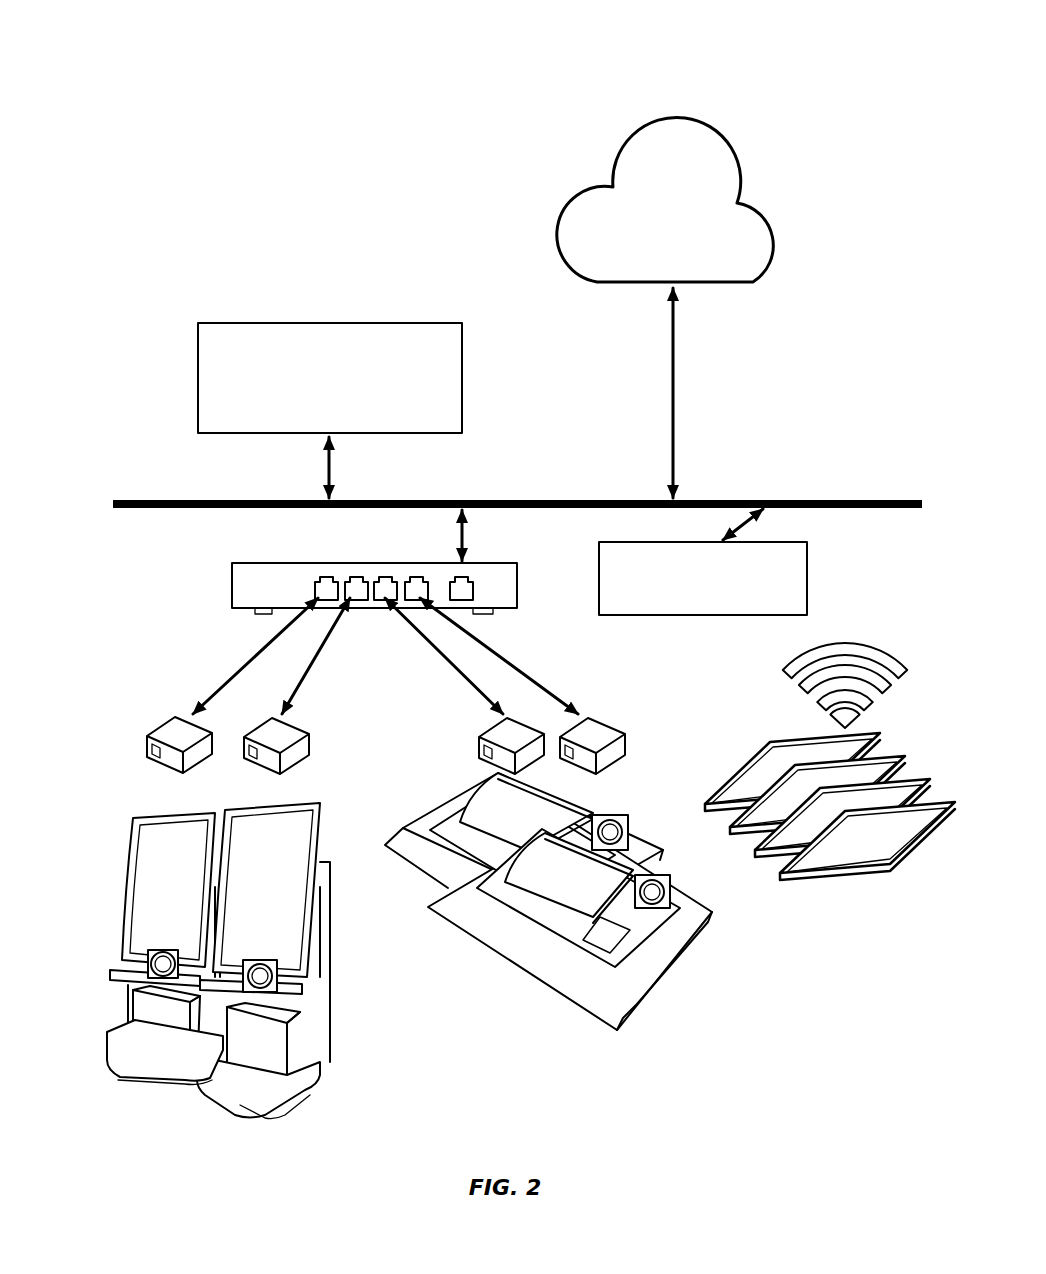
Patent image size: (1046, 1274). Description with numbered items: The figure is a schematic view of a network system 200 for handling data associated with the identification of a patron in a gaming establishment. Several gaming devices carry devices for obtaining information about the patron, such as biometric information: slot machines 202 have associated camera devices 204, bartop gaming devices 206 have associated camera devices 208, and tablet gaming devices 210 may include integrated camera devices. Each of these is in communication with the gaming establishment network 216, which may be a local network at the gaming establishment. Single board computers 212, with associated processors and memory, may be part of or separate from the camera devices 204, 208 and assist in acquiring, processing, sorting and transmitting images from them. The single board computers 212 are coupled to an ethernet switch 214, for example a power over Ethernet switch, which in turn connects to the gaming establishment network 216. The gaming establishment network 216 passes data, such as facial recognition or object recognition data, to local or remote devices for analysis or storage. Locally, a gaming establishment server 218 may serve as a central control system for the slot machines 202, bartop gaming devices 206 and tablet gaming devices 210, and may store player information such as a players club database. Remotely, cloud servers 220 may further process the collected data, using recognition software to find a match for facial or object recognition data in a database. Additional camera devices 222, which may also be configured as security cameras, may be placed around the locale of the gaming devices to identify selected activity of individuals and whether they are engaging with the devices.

The network system 200 is at (818, 112).
The slot machines 202 is at (175, 1067).
The camera devices 204 is at (122, 963).
The bartop gaming devices 206 is at (555, 968).
The camera devices 208 is at (672, 893).
The tablet gaming devices 210 is at (782, 762).
The single board computers 212 is at (173, 733).
The ethernet switch 214 is at (242, 590).
The gaming establishment network 216 is at (150, 501).
The gaming establishment server 218 is at (309, 393).
The cloud servers 220 is at (582, 240).
The additional camera devices 222 is at (687, 595).